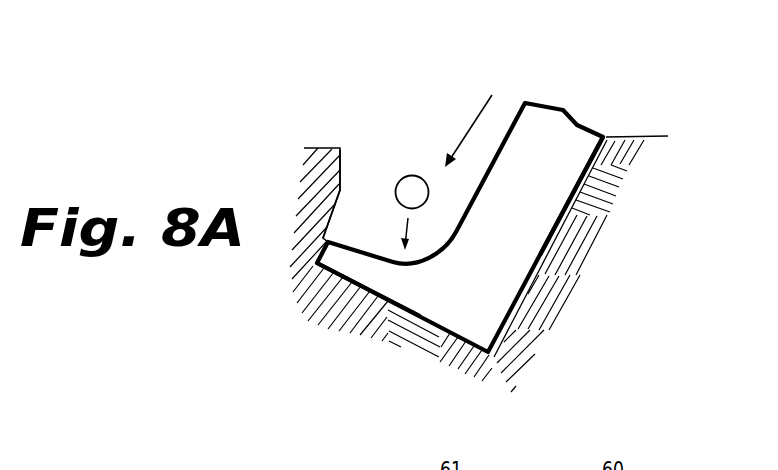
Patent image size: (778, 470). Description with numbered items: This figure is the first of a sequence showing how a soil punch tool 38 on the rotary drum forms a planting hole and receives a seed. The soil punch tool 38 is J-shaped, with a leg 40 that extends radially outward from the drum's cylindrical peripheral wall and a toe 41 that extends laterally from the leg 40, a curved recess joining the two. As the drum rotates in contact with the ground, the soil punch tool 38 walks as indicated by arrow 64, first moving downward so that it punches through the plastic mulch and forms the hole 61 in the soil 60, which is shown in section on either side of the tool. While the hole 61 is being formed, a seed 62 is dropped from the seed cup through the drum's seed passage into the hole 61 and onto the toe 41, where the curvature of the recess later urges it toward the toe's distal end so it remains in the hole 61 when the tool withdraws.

The soil punch tool 38 is at (528, 226).
The leg 40 is at (556, 182).
The toe 41 is at (369, 271).
The soil 60 is at (647, 133).
The hole 61 is at (373, 178).
The seed 62 is at (412, 187).
The arrow 64 is at (483, 105).